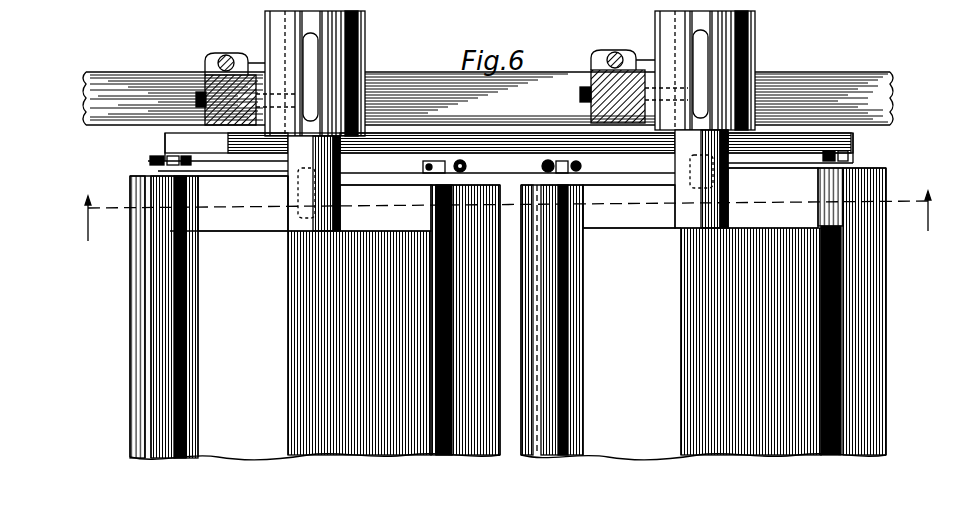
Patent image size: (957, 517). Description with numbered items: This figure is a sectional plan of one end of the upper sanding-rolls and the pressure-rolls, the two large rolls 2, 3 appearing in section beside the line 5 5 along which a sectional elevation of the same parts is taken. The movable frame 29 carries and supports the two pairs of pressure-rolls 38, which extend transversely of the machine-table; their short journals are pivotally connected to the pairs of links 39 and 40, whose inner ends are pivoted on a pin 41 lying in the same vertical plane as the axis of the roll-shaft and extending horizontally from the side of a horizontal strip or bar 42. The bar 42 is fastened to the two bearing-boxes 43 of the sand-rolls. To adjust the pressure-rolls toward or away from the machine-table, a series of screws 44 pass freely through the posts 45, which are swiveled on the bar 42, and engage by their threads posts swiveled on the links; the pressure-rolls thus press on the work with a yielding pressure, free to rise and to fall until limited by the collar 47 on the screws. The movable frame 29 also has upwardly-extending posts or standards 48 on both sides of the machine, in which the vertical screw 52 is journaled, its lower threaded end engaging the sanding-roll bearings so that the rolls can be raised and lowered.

The cylinder 2 is at (702, 320).
The cylinder 3 is at (300, 316).
The line 5 5 is at (505, 213).
The movable frame 29 is at (488, 98).
The pressure-rolls 38 is at (128, 0).
The links 39 is at (237, 158).
The links 40 is at (398, 173).
The pin 41 is at (303, 190).
The horizontal strip or bar 42 is at (524, 128).
The bearing-boxes 43 is at (343, 43).
The screws 44 is at (140, 152).
The posts 45 is at (458, 157).
The collar 47 is at (445, 19).
The posts or standards 48 is at (213, 72).
The screw 52 is at (216, 48).